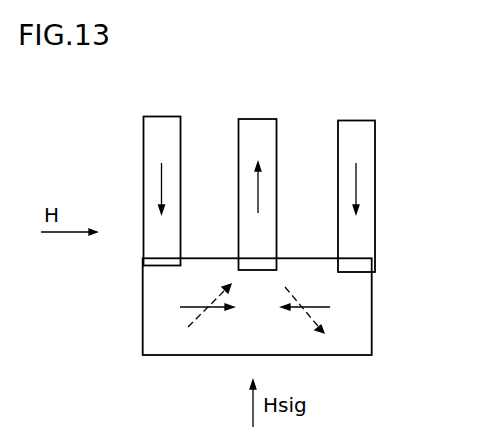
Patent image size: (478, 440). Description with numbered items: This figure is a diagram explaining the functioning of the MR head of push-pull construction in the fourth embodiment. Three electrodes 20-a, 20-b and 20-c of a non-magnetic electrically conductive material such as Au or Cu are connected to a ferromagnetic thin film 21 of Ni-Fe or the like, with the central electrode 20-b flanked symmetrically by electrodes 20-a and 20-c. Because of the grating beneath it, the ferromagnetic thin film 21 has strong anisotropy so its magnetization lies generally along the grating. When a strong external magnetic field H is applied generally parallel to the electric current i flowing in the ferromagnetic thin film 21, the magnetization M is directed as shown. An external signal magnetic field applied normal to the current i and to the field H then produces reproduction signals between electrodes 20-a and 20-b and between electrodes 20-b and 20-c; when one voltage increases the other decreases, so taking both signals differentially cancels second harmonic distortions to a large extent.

The electrode 20-a is at (163, 112).
The central electrode 20-b is at (258, 115).
The electrode 20-c is at (358, 115).
The ferromagnetic thin film 21 is at (360, 310).